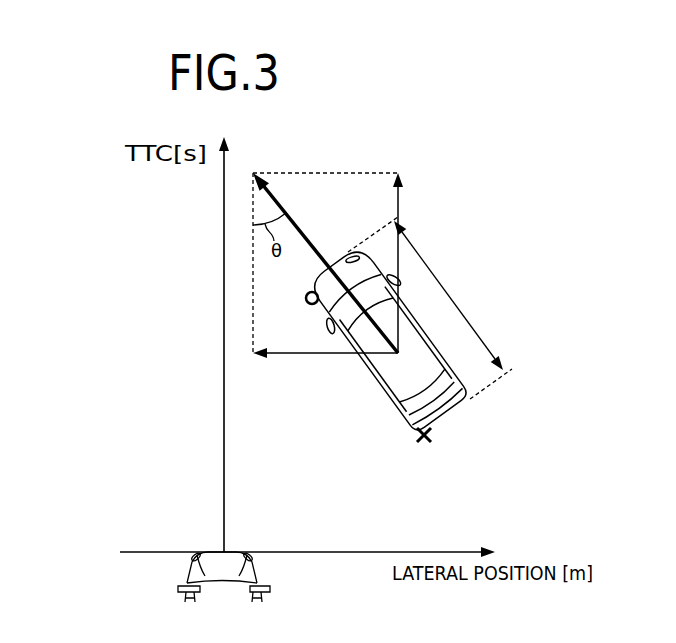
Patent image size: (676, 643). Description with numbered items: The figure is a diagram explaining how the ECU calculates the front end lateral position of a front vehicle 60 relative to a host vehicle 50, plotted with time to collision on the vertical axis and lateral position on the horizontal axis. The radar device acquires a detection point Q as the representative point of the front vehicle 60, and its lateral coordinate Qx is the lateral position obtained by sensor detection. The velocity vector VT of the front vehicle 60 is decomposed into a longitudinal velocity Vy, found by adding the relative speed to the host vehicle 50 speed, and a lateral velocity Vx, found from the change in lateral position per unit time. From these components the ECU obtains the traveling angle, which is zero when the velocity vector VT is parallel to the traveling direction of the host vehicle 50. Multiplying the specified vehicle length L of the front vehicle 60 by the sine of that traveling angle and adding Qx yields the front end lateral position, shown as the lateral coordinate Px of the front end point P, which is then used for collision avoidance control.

The host vehicle 50 is at (258, 578).
The front vehicle 60 is at (384, 396).
The front end point P is at (306, 299).
The detection point Q is at (432, 437).
The vehicle length L is at (460, 307).
The velocity vector VT is at (283, 195).
The lateral velocity Vx is at (295, 355).
The longitudinal velocity Vy is at (399, 200).